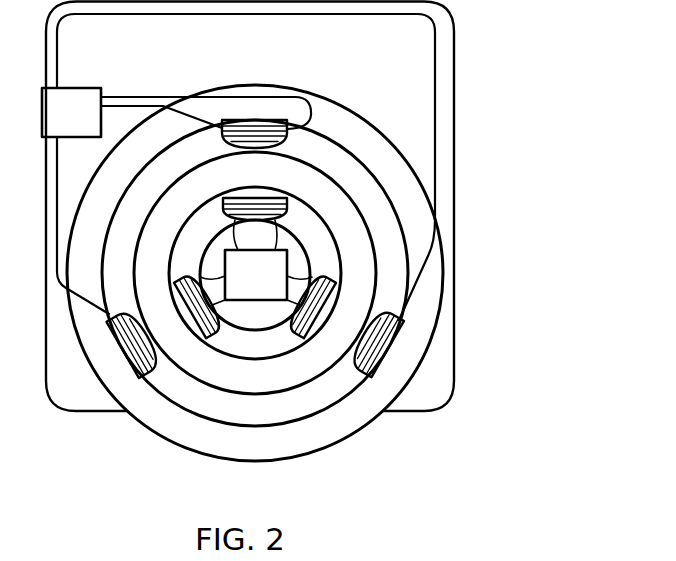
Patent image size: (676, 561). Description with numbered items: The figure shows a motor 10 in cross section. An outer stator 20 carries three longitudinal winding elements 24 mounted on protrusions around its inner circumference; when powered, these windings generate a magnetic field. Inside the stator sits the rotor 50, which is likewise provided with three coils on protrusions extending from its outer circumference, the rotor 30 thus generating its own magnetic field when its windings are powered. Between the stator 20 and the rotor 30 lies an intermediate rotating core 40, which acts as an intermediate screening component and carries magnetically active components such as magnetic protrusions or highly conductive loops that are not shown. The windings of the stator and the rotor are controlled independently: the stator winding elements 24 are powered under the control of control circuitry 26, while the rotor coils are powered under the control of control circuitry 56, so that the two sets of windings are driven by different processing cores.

The motor 10 is at (493, 288).
The stator 20 is at (242, 463).
The winding elements 24 is at (372, 367).
The control circuitry 26 is at (90, 88).
The rotor 30 is at (283, 237).
The intermediate rotating core 40 is at (357, 230).
The rotor 50 is at (233, 345).
The control circuitry 56 is at (295, 223).